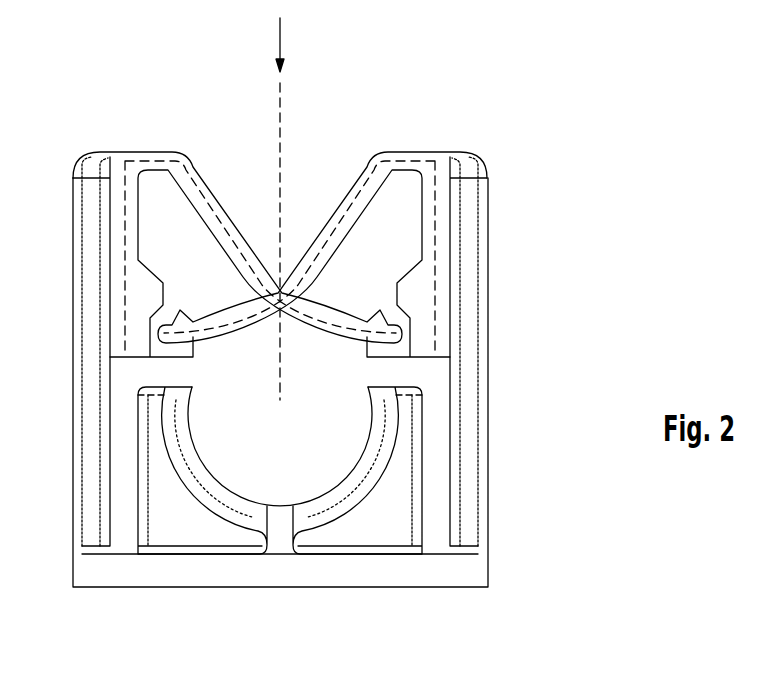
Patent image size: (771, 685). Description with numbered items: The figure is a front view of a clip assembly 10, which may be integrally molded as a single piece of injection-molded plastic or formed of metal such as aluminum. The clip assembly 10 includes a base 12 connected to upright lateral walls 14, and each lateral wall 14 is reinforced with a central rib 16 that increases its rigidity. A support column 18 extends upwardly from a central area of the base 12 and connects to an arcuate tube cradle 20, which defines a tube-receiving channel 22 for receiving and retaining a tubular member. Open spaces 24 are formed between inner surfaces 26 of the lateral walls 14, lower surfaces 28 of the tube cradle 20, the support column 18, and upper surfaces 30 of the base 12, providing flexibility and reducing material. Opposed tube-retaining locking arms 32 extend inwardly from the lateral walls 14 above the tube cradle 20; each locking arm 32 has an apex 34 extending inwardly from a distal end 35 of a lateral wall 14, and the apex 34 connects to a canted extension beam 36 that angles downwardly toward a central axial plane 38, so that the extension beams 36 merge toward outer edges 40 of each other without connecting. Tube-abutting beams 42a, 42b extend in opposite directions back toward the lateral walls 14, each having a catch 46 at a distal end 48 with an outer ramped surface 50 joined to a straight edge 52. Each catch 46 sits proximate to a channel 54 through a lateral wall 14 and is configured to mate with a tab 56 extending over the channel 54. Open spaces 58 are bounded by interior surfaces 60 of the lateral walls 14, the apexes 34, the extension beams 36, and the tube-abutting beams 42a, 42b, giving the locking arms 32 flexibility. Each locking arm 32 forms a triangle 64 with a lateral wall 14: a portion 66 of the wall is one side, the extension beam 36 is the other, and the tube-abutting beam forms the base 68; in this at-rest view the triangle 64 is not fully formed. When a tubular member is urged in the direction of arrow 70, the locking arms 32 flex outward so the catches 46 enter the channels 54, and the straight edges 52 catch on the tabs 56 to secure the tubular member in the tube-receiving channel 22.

The clip assembly 10 is at (90, 52).
The base 12 is at (442, 588).
The lateral wall 14 is at (77, 497).
The central rib 16 is at (73, 310).
The support column 18 is at (267, 557).
The tube cradle 20 is at (217, 488).
The tube-receiving channel 22 is at (297, 512).
The open spaces 24 is at (145, 558).
The inner surfaces 26 is at (150, 503).
The lower surfaces 28 is at (223, 527).
The upper surfaces 30 is at (180, 547).
The locking arm 32 is at (201, 154).
The apex 34 is at (152, 151).
The distal end 35 is at (98, 150).
The canted extension beam 36 is at (230, 215).
The central axial plane 38 is at (283, 112).
The outer edges 40 is at (242, 260).
The tube-abutting beam 42a is at (195, 318).
The tube-abutting beam 42b is at (365, 318).
The catch 46 is at (150, 327).
The distal end 48 is at (205, 362).
The outer ramped surface 50 is at (150, 303).
The straight edge 52 is at (172, 338).
The channel 54 is at (115, 328).
The tab 56 is at (128, 320).
The open spaces 58 is at (167, 198).
The interior surfaces 60 is at (137, 220).
The triangle 64 is at (128, 165).
The portion 66 is at (122, 247).
The base 68 is at (272, 312).
The arrow 70 is at (283, 45).